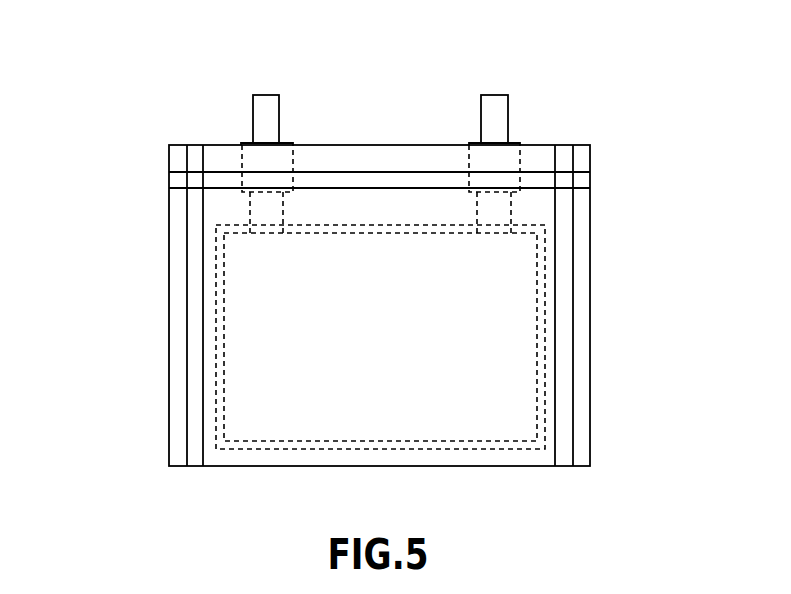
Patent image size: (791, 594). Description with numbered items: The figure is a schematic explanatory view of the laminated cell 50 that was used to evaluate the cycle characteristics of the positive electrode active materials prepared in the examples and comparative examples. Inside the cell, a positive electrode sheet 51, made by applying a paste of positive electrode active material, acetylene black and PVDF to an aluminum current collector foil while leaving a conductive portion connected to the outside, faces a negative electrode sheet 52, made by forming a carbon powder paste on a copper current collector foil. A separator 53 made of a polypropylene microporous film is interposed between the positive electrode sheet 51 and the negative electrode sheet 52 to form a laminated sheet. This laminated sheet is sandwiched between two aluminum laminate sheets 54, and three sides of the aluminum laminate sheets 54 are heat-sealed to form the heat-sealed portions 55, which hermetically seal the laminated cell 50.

The laminated cell 50 is at (122, 53).
The positive electrode sheet 51 is at (272, 117).
The negative electrode sheet 52 is at (500, 118).
The separator 53 is at (545, 252).
The aluminum laminate sheets 54 is at (580, 320).
The heat-sealed portions 55 is at (563, 405).